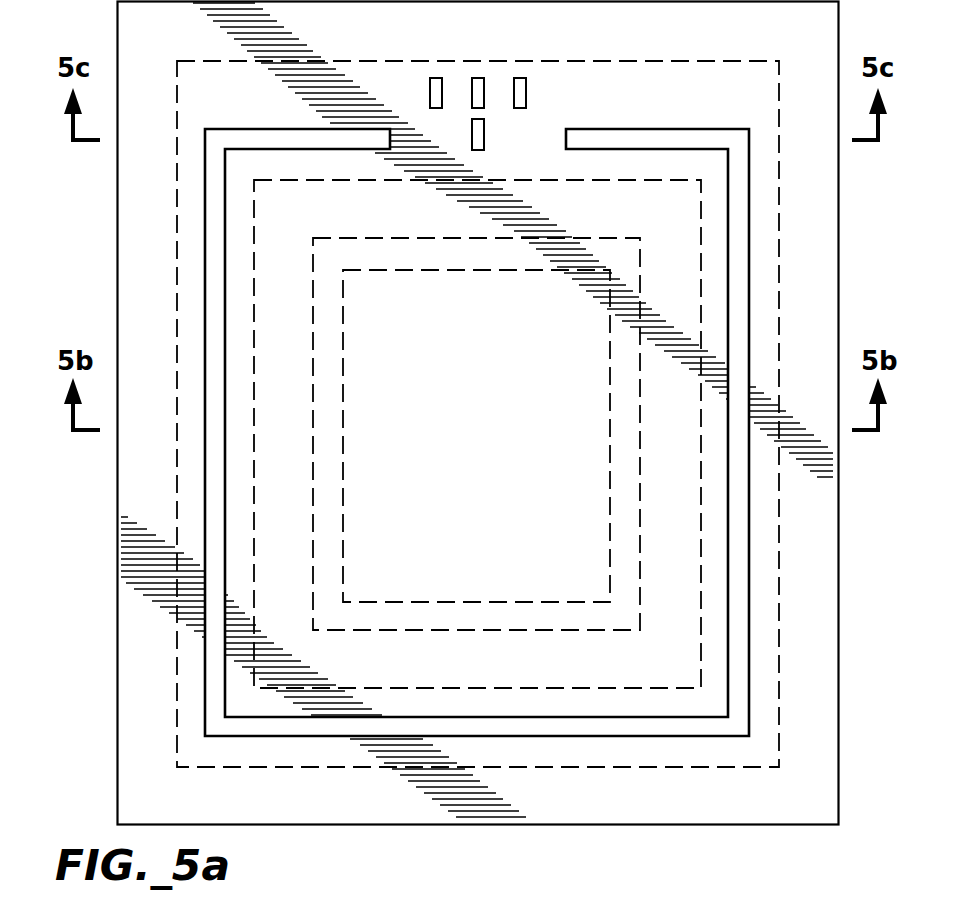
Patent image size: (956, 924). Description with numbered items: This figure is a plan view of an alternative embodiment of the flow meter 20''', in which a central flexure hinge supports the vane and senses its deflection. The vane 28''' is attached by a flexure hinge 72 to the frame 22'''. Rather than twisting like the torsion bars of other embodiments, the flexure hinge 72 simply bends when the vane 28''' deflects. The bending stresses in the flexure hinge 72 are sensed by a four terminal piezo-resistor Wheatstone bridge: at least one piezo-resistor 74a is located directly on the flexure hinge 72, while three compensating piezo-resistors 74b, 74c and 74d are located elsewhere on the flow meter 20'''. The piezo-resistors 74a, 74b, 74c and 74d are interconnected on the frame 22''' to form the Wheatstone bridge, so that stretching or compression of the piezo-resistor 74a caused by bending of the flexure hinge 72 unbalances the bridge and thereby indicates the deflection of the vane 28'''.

The flow meter 20''' is at (397, 414).
The frame 22''' is at (444, 413).
The vane 28''' is at (476, 436).
The flexure hinge 72 is at (518, 127).
The piezo-resistor 74a is at (471, 124).
The compensating piezo-resistor 74b is at (430, 93).
The compensating piezo-resistor 74c is at (486, 86).
The compensating piezo-resistor 74d is at (527, 90).